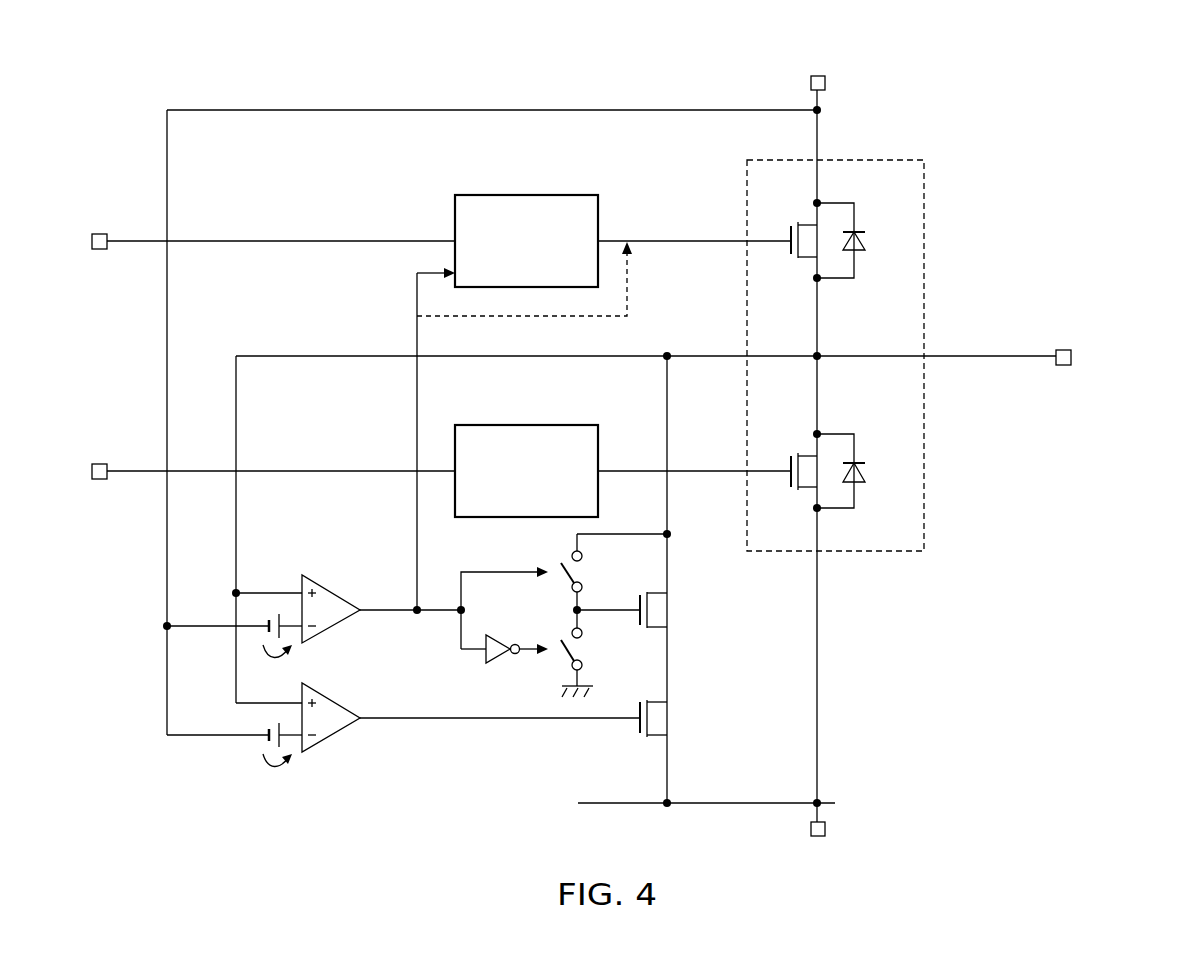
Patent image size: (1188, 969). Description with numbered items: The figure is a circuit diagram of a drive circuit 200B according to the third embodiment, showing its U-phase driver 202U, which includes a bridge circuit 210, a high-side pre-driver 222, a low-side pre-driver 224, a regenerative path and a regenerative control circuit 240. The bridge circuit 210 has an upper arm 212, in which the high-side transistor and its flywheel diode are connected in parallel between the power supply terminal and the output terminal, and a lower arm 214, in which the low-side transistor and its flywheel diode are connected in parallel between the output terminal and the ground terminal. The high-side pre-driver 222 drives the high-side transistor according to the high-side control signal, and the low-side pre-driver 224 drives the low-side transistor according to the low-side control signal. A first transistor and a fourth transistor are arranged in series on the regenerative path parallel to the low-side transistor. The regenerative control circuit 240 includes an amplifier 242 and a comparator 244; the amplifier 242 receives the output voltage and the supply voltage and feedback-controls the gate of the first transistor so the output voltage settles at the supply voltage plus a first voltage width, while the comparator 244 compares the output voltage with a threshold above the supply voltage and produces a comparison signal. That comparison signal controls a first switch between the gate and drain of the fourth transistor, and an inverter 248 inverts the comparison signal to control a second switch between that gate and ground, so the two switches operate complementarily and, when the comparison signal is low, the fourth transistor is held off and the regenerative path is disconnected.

The drive circuit 200B is at (1187, 64).
The U-phase driver 202U is at (939, 138).
The bridge circuit 210 is at (924, 251).
The upper arm 212 is at (843, 285).
The lower arm 214 is at (848, 427).
The high-side pre-driver 222 is at (558, 193).
The low-side pre-driver 224 is at (558, 425).
The regenerative control circuit 240 is at (278, 704).
The amplifier 242 is at (350, 682).
The comparator 244 is at (350, 573).
The inverter 248 is at (497, 661).